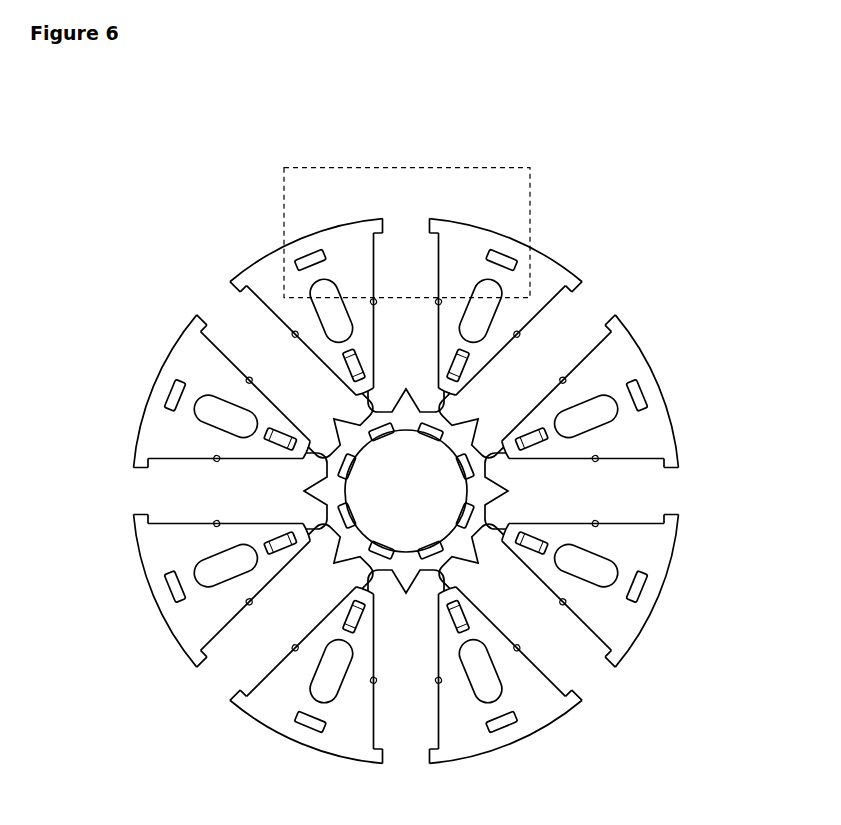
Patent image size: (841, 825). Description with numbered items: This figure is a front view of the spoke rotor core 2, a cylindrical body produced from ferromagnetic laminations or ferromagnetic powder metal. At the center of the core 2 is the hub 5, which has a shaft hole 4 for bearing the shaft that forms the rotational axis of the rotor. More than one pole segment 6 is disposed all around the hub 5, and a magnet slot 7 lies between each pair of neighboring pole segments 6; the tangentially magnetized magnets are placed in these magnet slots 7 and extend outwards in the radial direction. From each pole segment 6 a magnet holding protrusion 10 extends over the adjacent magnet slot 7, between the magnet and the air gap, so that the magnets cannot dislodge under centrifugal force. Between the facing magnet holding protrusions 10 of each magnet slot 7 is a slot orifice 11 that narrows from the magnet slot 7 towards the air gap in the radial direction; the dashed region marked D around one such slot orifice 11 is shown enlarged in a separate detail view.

The core 2 is at (231, 201).
The shaft hole 4 is at (357, 494).
The hub 5 is at (503, 487).
The pole segment 6 is at (640, 370).
The magnet slot 7 is at (261, 349).
The magnet holding protrusion 10 is at (586, 269).
The slot orifice 11 is at (406, 206).
The detail D is at (480, 167).